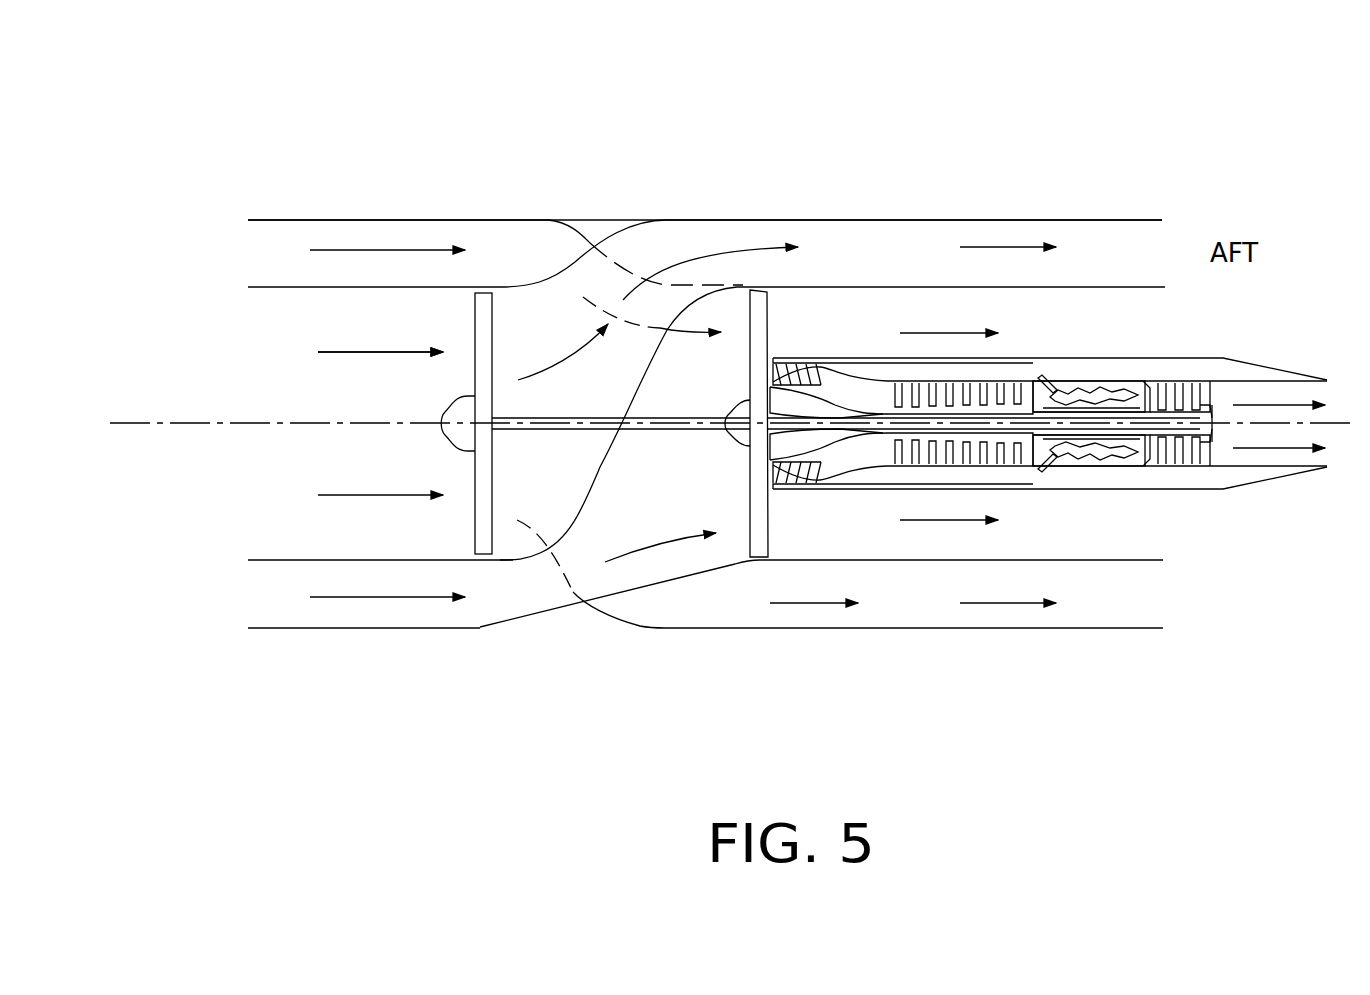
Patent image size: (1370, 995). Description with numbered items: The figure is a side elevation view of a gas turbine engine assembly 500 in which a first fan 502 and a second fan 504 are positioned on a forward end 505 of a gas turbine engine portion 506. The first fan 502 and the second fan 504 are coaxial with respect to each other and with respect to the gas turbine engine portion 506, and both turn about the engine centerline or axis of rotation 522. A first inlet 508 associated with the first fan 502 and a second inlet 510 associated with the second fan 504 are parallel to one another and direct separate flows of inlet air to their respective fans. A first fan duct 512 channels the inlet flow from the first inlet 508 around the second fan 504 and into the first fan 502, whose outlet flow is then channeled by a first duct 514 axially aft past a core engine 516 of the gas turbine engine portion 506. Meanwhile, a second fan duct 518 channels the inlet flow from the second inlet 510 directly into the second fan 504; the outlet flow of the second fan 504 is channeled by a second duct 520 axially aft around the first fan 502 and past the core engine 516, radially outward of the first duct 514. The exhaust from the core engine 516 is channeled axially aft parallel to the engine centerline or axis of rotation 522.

The gas turbine engine assembly 500 is at (620, 106).
The first fan 502 is at (753, 545).
The second fan 504 is at (483, 540).
The forward end 505 is at (578, 640).
The gas turbine engine portion 506 is at (1155, 490).
The first inlet 508 is at (268, 240).
The second inlet 510 is at (226, 517).
The first fan duct 512 is at (433, 220).
The first duct 514 is at (1078, 287).
The core engine 516 is at (1077, 356).
The second fan duct 518 is at (265, 560).
The second duct 520 is at (690, 220).
The engine centerline or axis of rotation 522 is at (1345, 420).